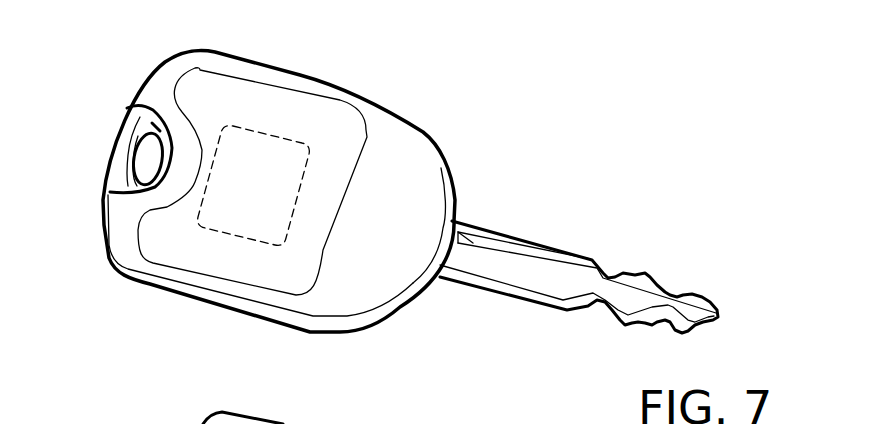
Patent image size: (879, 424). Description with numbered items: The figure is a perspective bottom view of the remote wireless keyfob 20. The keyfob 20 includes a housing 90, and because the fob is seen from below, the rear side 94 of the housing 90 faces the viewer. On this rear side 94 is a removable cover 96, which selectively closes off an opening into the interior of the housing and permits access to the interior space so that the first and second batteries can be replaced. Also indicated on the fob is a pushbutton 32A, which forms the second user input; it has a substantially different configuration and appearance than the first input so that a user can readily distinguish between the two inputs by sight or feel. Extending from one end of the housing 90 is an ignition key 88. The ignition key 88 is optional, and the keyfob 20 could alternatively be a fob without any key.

The keyfob 20 is at (305, 75).
The housing 90 is at (423, 132).
The rear side 94 is at (360, 300).
The removable cover 96 is at (227, 93).
The pushbutton 32A is at (215, 237).
The ignition key 88 is at (567, 253).